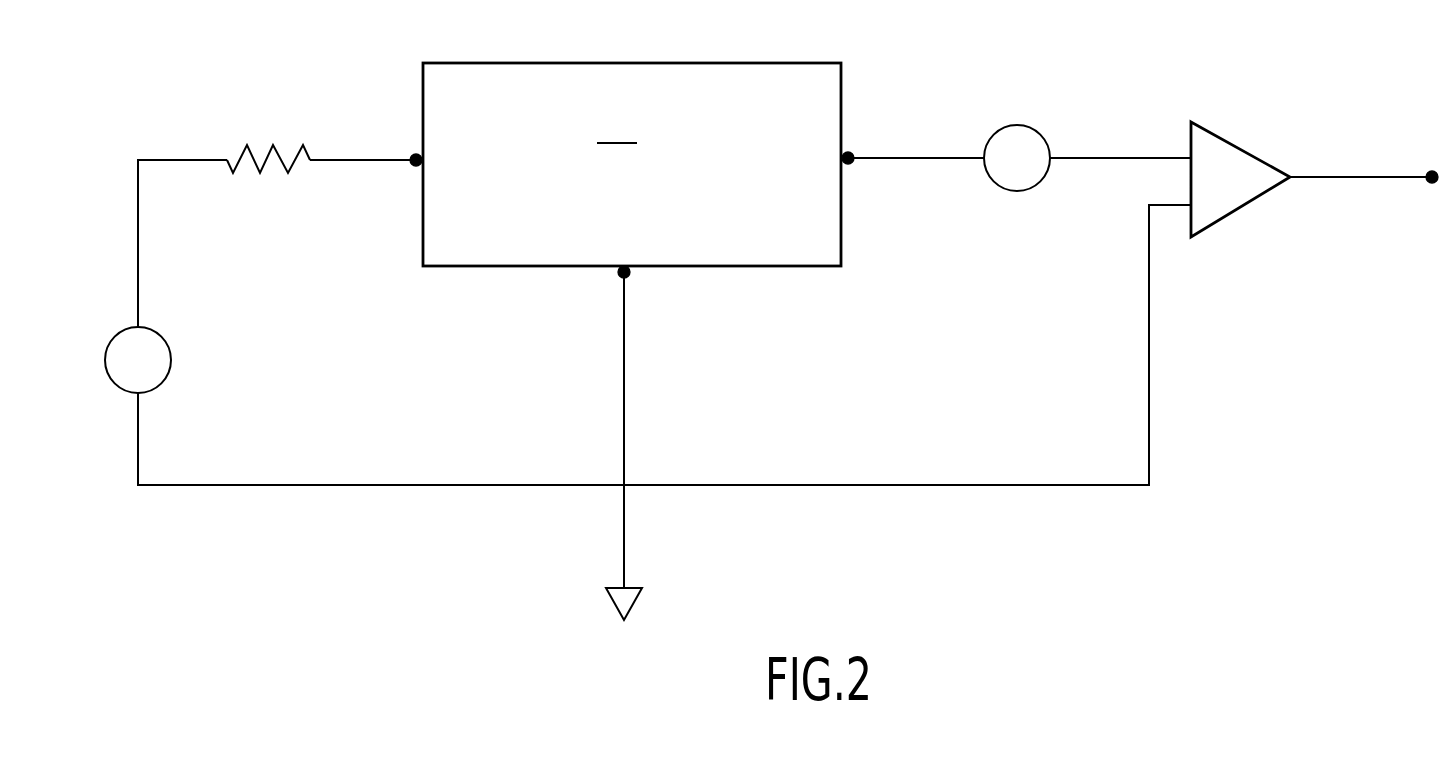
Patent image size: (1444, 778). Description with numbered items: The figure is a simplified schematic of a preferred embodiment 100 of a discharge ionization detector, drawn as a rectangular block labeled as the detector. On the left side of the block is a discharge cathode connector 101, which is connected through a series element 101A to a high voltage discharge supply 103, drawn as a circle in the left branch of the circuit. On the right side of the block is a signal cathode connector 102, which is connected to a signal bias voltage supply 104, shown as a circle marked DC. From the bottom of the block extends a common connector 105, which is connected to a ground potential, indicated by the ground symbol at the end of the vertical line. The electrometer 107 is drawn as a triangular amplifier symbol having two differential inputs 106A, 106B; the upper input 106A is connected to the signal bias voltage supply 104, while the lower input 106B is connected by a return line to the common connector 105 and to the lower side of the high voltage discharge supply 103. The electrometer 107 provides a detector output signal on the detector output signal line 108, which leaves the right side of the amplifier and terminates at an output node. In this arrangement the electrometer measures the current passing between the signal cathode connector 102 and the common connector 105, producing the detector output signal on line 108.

The discharge ionization detector 100 is at (632, 164).
The discharge cathode connector 101 is at (405, 150).
The input resistor 101A is at (263, 150).
The signal cathode connector 102 is at (855, 140).
The high voltage discharge supply 103 is at (172, 360).
The signal bias voltage supply 104 is at (1017, 191).
The common connector 105 is at (637, 280).
The differential input 106A is at (1115, 155).
The differential input 106B is at (1170, 207).
The electrometer 107 is at (1263, 197).
The detector output signal line 108 is at (1387, 175).